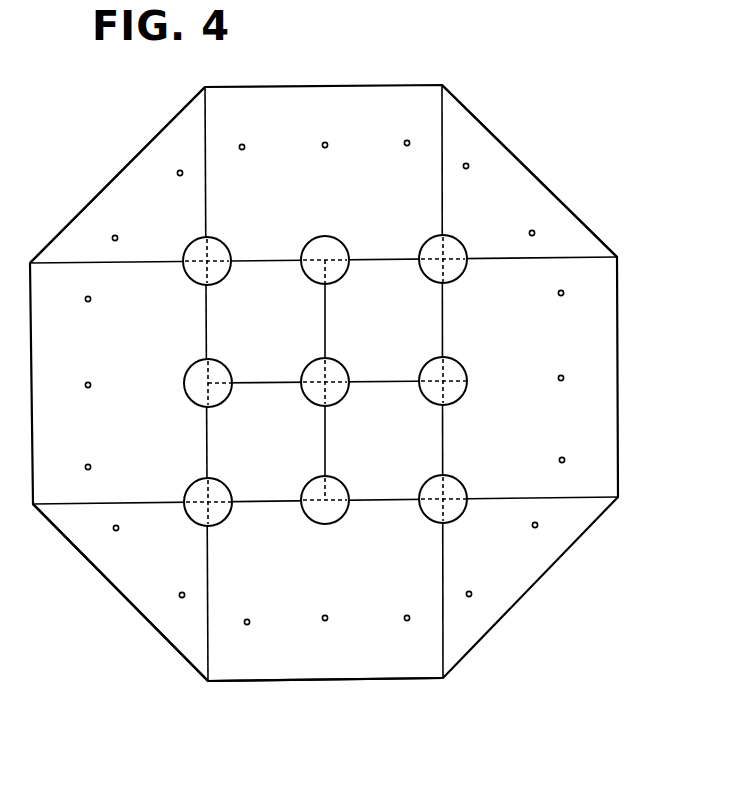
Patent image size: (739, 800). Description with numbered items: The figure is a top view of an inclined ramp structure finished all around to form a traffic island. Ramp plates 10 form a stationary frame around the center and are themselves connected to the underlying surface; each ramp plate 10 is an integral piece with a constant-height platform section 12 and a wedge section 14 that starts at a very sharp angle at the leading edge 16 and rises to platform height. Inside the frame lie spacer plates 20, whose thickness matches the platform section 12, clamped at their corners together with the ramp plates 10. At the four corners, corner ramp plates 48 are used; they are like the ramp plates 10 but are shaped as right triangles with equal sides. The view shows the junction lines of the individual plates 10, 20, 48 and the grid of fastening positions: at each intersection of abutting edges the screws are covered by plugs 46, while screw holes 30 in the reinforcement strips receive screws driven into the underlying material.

The ramp plate 10 is at (366, 106).
The platform section 12 is at (95, 551).
The wedge section 14 is at (187, 537).
The leading edge 16 is at (98, 196).
The spacer plate 20 is at (283, 339).
The screw holes 30 is at (466, 160).
The plug 46 is at (454, 391).
The corner ramp plate 48 is at (556, 200).